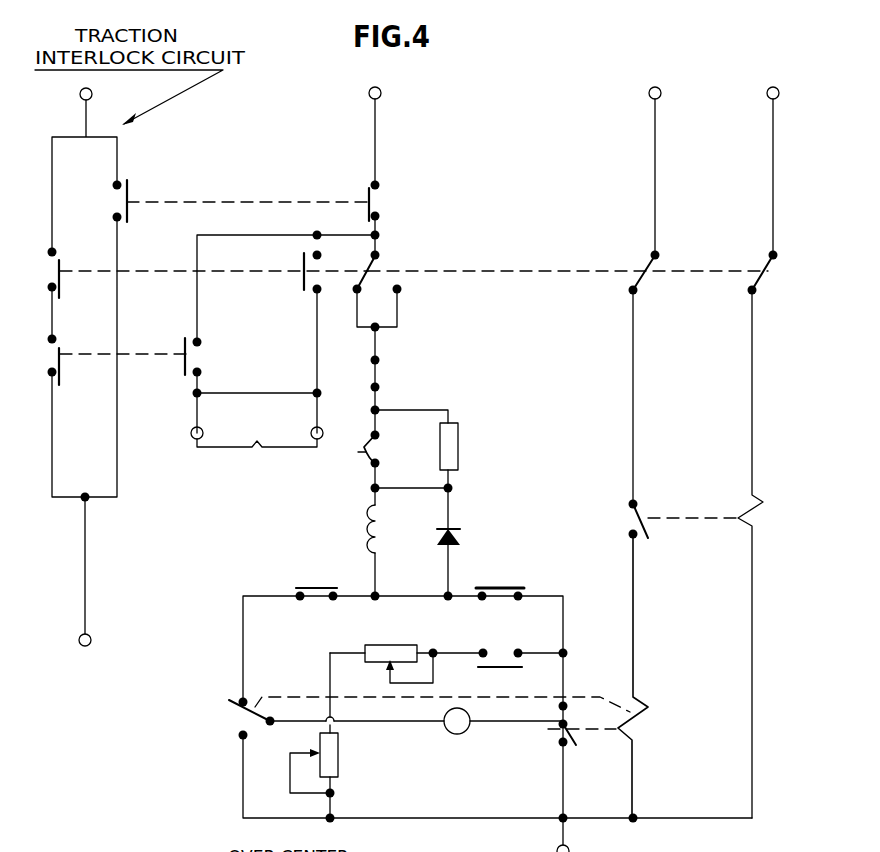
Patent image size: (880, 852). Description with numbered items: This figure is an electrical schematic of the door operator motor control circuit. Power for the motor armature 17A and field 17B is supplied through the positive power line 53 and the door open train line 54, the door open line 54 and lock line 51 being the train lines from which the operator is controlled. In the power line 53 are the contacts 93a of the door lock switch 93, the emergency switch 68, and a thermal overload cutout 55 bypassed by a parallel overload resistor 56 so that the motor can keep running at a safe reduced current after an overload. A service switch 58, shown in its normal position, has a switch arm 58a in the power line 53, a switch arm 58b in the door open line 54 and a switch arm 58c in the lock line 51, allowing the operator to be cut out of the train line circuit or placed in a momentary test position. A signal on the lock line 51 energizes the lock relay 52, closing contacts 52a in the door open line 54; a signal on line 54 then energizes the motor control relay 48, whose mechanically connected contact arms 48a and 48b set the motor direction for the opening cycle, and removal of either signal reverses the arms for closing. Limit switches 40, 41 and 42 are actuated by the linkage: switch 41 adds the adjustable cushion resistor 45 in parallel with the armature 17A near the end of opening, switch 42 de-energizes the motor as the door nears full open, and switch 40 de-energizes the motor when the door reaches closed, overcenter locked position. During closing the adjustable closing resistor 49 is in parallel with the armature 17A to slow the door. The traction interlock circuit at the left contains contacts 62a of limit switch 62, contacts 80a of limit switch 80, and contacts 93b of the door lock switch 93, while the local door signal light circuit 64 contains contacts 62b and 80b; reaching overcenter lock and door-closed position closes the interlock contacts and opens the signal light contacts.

The armature 17A is at (457, 734).
The field 17B is at (378, 535).
The limit switch 40 is at (313, 587).
The limit switch 41 is at (500, 668).
The limit switch 42 is at (503, 588).
The cushion resistor 45 is at (400, 645).
The motor control relay 48 is at (650, 703).
The contact arm 48a is at (548, 727).
The contact arm 48b is at (255, 712).
The closing resistor 49 is at (338, 764).
The lock line 51 is at (773, 122).
The lock relay 52 is at (762, 515).
The contacts 52a is at (642, 507).
The positive line 53 is at (376, 130).
The door open train line 54 is at (655, 118).
The thermal overload cutout 55 is at (362, 441).
The overload resistor 56 is at (455, 428).
The service switch 58 is at (578, 275).
The switch arm 58a is at (377, 268).
The switch arm 58b is at (650, 266).
The switch arm 58c is at (766, 268).
The limit switch 62 is at (124, 357).
The contacts 62a is at (60, 354).
The switch contacts 62b is at (188, 354).
The local door signal light circuit 64 is at (193, 257).
The emergency switch 68 is at (378, 373).
The limit switch 80 is at (133, 272).
The interlock switch contacts 80a is at (60, 268).
The signal light switch contacts 80b is at (304, 263).
The door lock switch 93 is at (250, 202).
The contacts 93a is at (368, 191).
The contacts 93b is at (130, 196).